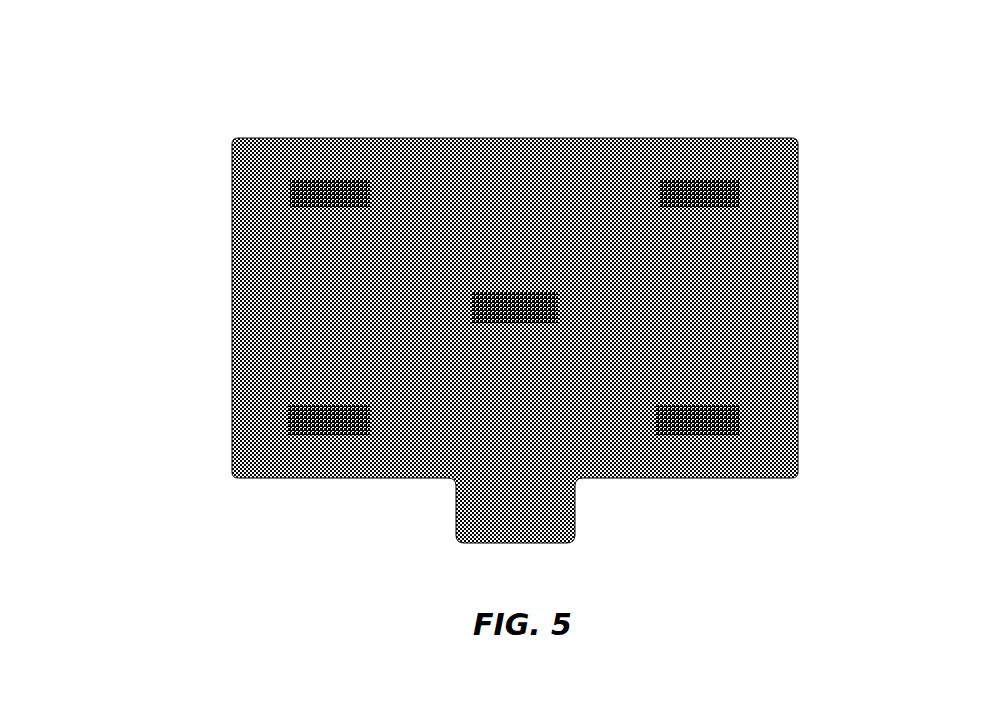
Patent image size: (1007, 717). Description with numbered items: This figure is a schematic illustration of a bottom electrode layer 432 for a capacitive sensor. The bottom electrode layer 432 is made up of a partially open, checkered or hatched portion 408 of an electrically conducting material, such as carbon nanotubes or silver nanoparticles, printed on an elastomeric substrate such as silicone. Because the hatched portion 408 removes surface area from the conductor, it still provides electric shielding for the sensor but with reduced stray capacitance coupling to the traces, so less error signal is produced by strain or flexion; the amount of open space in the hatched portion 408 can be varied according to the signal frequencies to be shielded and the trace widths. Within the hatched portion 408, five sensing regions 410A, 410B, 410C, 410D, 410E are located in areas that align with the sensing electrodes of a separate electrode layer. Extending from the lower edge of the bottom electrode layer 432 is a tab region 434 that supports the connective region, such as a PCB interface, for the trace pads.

The hatched portion 408 is at (515, 304).
The sensing region 410A is at (330, 197).
The sensing region 410B is at (702, 192).
The sensing region 410C is at (705, 421).
The sensing region 410D is at (310, 420).
The sensing region 410E is at (505, 313).
The bottom electrode layer 432 is at (427, 460).
The tab region 434 is at (550, 520).